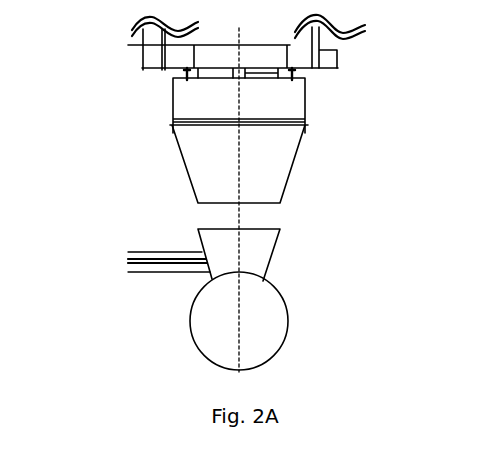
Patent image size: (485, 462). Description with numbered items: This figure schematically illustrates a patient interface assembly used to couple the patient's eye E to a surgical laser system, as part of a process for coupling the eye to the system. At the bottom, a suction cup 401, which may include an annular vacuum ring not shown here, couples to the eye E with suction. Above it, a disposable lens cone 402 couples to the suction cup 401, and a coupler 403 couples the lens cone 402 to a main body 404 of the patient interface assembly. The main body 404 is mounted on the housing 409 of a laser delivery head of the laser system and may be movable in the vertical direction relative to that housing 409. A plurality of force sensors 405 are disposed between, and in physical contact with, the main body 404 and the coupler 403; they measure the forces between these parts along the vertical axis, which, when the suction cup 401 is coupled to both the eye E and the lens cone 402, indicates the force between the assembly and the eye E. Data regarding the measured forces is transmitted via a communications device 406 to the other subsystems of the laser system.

The suction cup 401 is at (278, 252).
The disposable lens cone 402 is at (293, 172).
The coupler 403 is at (170, 115).
The main body 404 is at (303, 53).
The force sensors 405 is at (175, 79).
The communications device 406 is at (205, 57).
The housing 409 is at (327, 43).
The eye E is at (283, 300).